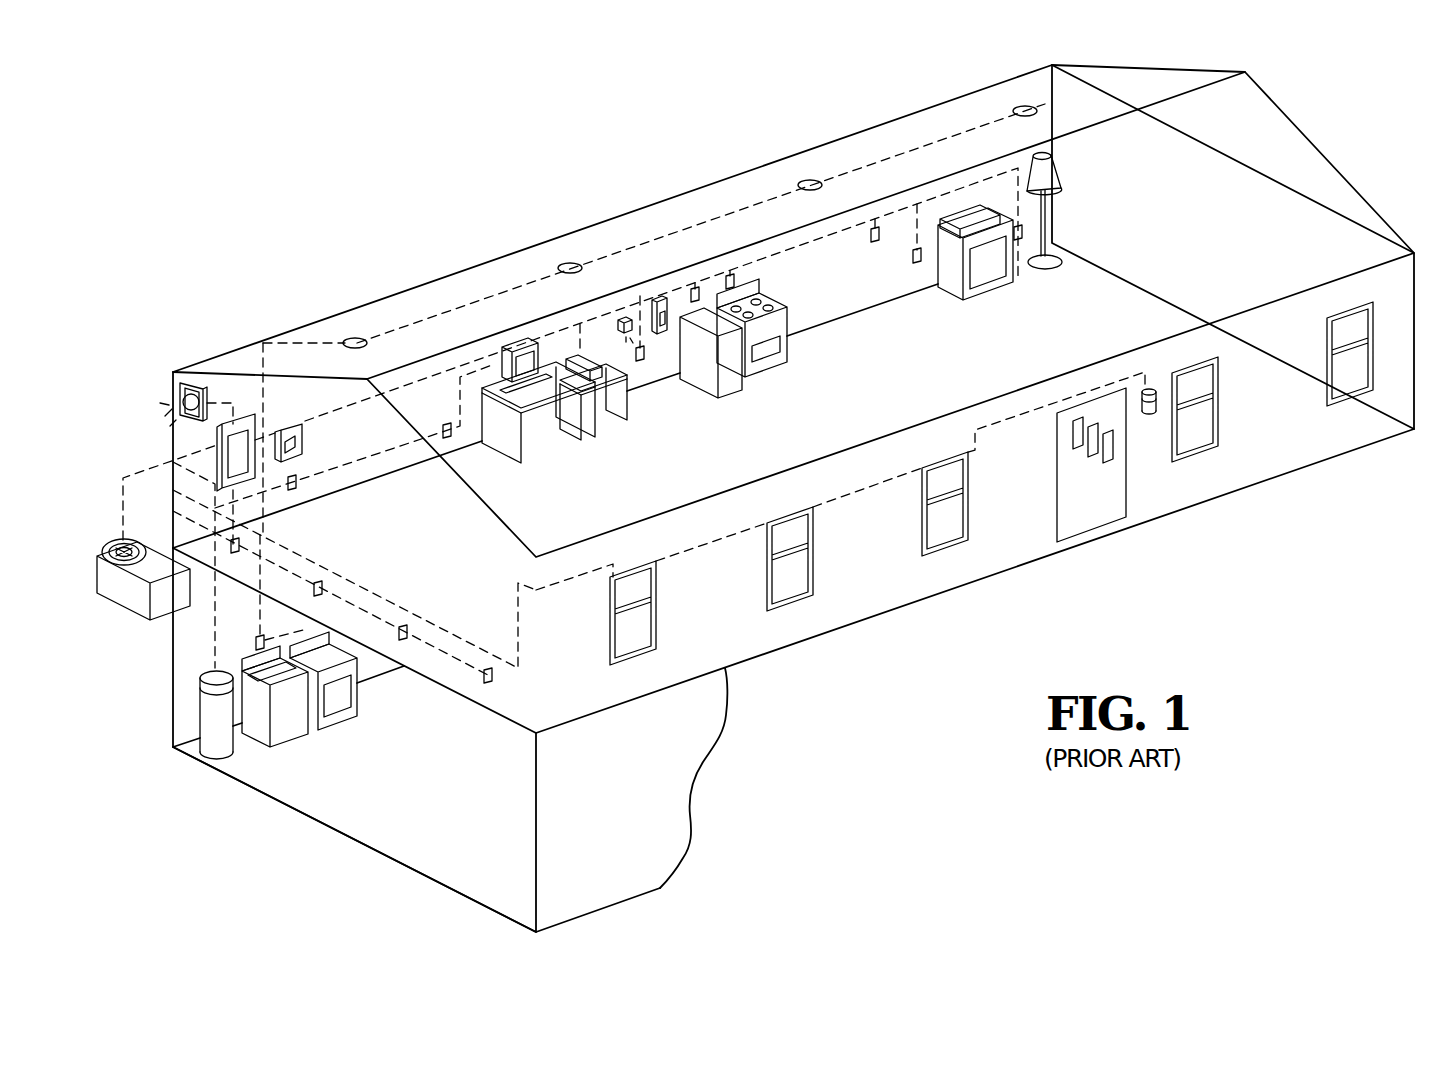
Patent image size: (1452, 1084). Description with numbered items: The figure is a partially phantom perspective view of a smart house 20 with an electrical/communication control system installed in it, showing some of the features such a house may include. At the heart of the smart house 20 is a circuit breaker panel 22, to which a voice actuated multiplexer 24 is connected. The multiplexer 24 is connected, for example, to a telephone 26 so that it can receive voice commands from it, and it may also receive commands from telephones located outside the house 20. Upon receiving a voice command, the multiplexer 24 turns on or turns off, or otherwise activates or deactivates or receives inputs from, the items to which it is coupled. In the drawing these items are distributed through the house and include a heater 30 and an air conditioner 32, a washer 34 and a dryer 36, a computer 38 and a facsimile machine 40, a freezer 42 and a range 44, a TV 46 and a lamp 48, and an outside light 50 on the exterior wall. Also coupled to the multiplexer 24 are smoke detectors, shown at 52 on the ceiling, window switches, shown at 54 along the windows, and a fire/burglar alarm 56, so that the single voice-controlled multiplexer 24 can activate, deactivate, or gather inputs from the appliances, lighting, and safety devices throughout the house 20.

The smart house 20 is at (1267, 587).
The circuit breaker panel 22 is at (233, 461).
The voice actuated multiplexer 24 is at (286, 438).
The telephone 26 is at (660, 336).
The heater 30 is at (210, 742).
The air conditioner 32 is at (126, 595).
The washer 34 is at (284, 732).
The dryer 36 is at (338, 709).
The computer 38 is at (510, 384).
The facsimile machine 40 is at (598, 384).
The freezer 42 is at (732, 376).
The range 44 is at (767, 341).
The TV 46 is at (953, 268).
The lamp 48 is at (1046, 228).
The outside light 50 is at (1149, 413).
The smoke detectors 52 is at (359, 340).
The window switches 54 is at (650, 567).
The fire/burglar alarm 56 is at (176, 396).